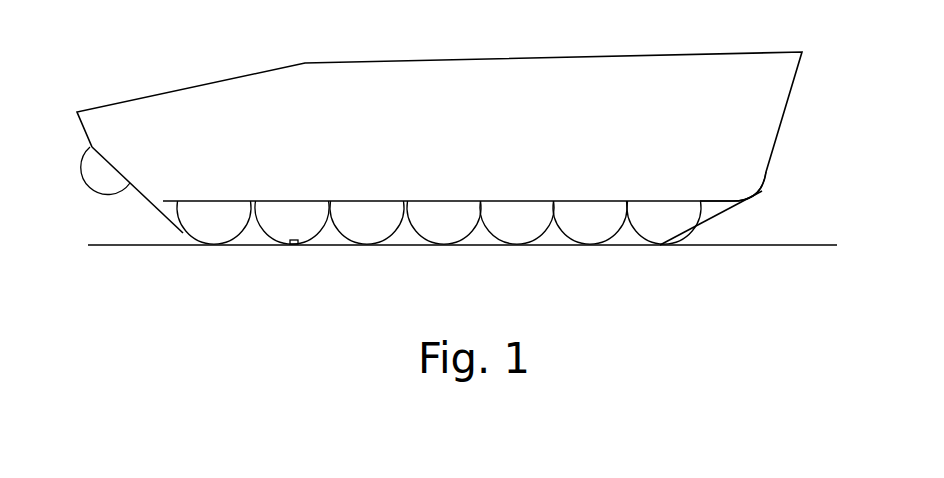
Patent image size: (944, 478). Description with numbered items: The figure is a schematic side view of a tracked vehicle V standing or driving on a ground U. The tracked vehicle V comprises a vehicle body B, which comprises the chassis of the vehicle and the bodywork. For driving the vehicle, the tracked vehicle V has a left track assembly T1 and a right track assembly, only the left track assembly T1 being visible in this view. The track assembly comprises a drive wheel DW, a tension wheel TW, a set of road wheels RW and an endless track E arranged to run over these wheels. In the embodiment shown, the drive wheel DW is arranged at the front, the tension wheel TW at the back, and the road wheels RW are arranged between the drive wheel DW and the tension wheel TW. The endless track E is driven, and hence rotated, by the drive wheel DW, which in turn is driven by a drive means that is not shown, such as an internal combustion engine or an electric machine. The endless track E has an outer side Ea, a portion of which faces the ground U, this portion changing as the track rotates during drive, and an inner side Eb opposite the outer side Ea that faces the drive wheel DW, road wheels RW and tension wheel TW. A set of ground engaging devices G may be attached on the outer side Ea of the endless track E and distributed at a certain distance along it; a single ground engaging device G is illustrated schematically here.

The tracked vehicle V is at (218, 46).
The vehicle body B is at (735, 50).
The inner side of the endless track Eb is at (166, 213).
The outer side of the endless track Ea is at (139, 220).
The drive wheel DW is at (128, 192).
The road wheels RW is at (178, 226).
The ground engaging device G is at (297, 248).
The endless track E is at (707, 228).
The left track assembly T1 is at (748, 212).
The tension wheel TW is at (722, 206).
The ground U is at (797, 240).